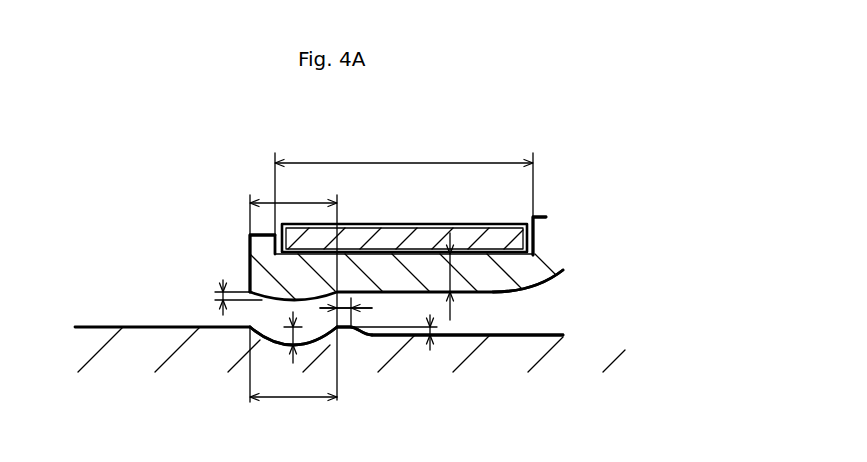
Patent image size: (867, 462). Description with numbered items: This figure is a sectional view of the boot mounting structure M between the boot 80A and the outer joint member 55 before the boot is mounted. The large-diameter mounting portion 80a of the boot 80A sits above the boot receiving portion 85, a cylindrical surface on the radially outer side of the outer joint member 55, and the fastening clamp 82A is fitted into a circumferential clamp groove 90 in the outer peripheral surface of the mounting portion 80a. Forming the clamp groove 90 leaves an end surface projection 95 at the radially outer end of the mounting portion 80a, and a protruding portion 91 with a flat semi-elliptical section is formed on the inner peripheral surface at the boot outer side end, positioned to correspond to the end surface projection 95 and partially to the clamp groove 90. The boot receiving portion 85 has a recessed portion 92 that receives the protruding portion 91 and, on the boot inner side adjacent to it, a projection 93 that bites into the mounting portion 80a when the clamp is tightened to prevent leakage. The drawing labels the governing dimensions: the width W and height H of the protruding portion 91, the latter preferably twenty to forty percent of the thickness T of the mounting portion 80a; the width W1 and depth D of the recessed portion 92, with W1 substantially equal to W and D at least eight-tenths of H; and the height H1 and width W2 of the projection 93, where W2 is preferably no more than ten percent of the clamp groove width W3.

The outer joint member 55 is at (142, 325).
The boot 80A is at (547, 218).
The large-diameter mounting portion 80a is at (513, 293).
The fastening clamp 82A is at (472, 232).
The boot receiving portion 85 is at (459, 328).
The clamp groove 90 is at (427, 255).
The protruding portion 91 is at (252, 331).
The recessed portion 92 is at (338, 332).
The projection 93 is at (360, 309).
The end surface projection 95 is at (257, 243).
The boot mounting structure M is at (560, 293).
The thickness T is at (466, 280).
The width dimension W is at (293, 288).
The width dimension W1 is at (293, 376).
The width dimension W2 is at (345, 305).
The clamp groove width W3 is at (404, 187).
The height dimension H is at (228, 297).
The height dimension H1 is at (441, 338).
The depth dimension D is at (283, 348).